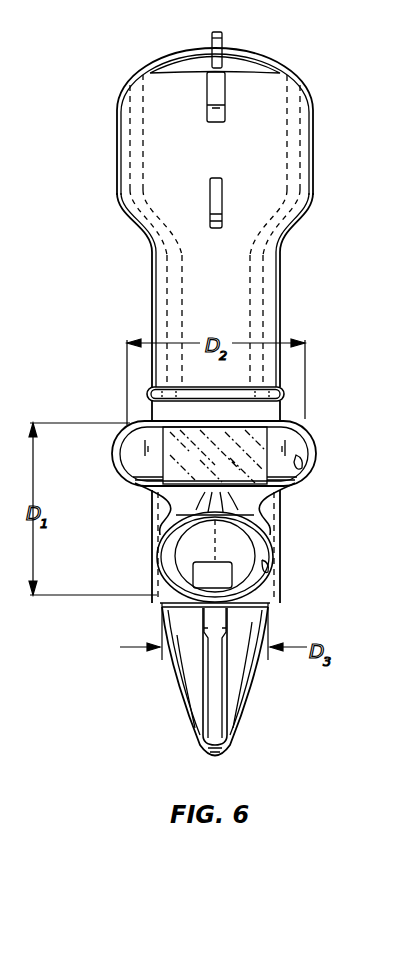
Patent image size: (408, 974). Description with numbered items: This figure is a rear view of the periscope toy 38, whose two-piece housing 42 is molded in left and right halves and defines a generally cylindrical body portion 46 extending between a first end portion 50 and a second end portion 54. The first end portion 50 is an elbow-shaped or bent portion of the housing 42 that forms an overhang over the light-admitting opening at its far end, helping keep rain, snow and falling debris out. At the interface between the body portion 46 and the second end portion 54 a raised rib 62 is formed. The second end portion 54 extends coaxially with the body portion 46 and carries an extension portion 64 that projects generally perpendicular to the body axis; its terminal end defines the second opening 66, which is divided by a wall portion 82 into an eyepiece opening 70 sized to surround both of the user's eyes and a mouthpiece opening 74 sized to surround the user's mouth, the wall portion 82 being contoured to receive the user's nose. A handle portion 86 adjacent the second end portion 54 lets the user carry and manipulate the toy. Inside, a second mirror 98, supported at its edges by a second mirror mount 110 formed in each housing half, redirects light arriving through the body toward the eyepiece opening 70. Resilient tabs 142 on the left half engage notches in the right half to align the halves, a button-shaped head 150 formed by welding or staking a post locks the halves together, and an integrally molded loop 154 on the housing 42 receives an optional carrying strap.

The periscope toy 38 is at (300, 145).
The two-piece housing 42 is at (290, 205).
The body portion 46 is at (266, 313).
The first end portion 50 is at (296, 95).
The second end portion 54 is at (278, 515).
The raised rib 62 is at (266, 390).
The extension portion 64 is at (305, 433).
The second opening 66 is at (160, 528).
The eyepiece opening 70 is at (296, 470).
The mouthpiece opening 74 is at (268, 568).
The wall portion 82 is at (272, 542).
The handle portion 86 is at (215, 678).
The second mirror 98 is at (300, 444).
The second mirror mount 110 is at (137, 453).
The resilient tabs 142 is at (226, 626).
The button-shaped head 150 is at (224, 62).
The loop 154 is at (207, 84).